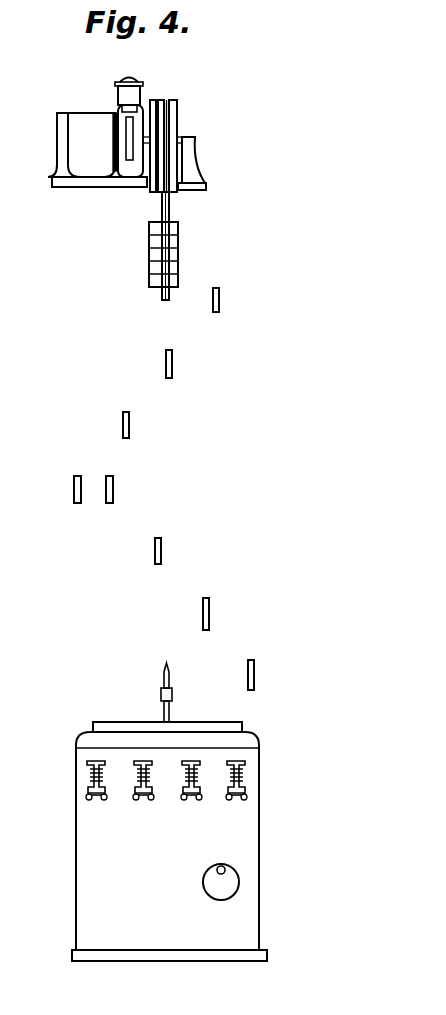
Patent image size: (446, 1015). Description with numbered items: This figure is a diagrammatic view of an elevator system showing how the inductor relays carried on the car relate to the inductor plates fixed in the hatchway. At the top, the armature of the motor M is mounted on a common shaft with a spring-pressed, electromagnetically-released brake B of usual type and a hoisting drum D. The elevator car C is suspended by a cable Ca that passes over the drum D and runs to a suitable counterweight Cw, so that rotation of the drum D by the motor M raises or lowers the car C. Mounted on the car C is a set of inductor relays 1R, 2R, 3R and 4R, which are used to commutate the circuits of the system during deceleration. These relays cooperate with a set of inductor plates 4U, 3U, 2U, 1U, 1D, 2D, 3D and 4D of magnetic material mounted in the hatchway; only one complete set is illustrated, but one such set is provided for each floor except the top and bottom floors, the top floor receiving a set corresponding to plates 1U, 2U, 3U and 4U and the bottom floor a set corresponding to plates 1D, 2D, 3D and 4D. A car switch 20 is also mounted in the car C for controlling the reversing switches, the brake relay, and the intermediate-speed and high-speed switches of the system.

The brake B is at (126, 80).
The motor M is at (86, 113).
The hoisting drum D is at (177, 110).
The cable Ca is at (161, 200).
The counterweight Cw is at (178, 262).
The inductor plate 4D is at (219, 300).
The inductor plate 3D is at (172, 366).
The inductor plate 2D is at (129, 424).
The inductor plate 1D is at (74, 485).
The inductor plate 1U is at (113, 487).
The inductor plate 2U is at (161, 552).
The inductor plate 3U is at (209, 618).
The inductor plate 4U is at (254, 682).
The inductor relay 1R is at (96, 798).
The inductor relay 2R is at (141, 798).
The inductor relay 3R is at (191, 798).
The inductor relay 4R is at (236, 798).
The elevator car C is at (161, 884).
The car switch 20 is at (236, 870).